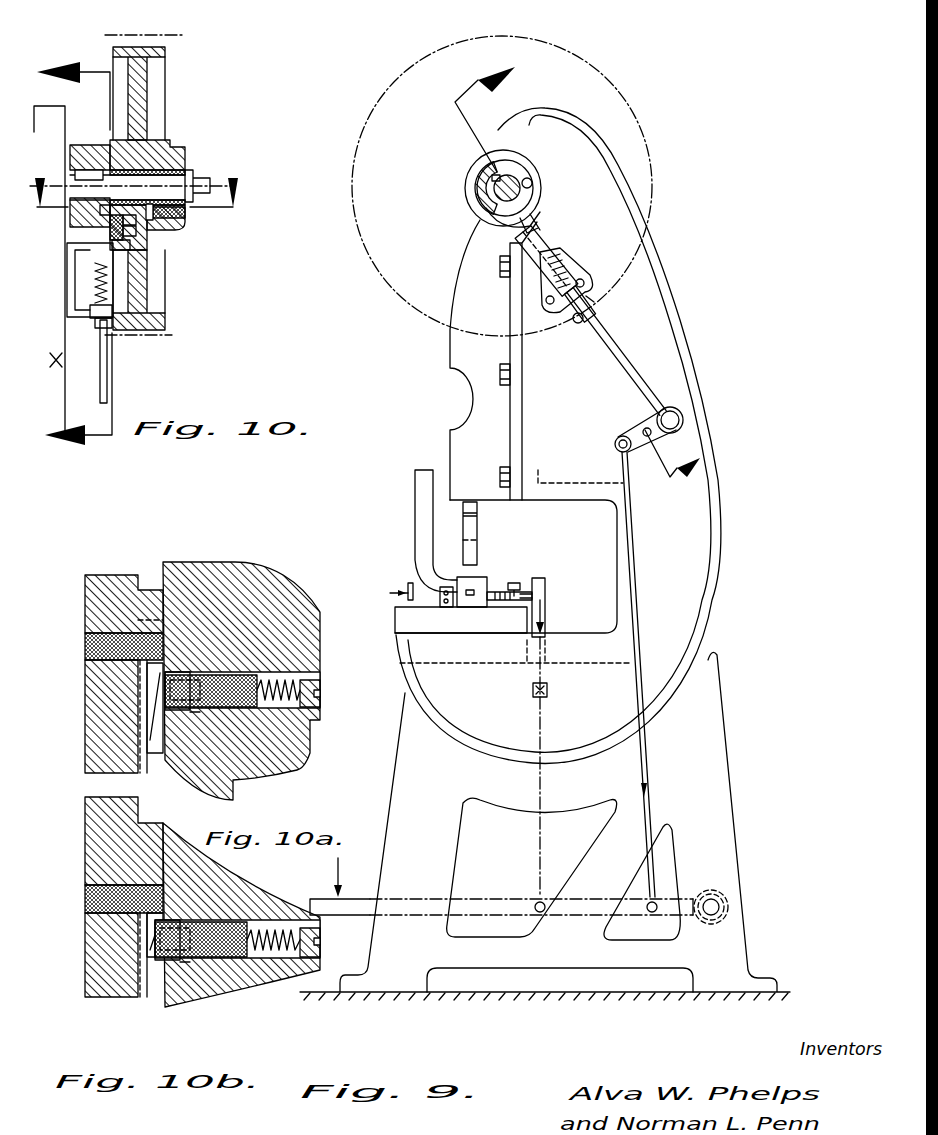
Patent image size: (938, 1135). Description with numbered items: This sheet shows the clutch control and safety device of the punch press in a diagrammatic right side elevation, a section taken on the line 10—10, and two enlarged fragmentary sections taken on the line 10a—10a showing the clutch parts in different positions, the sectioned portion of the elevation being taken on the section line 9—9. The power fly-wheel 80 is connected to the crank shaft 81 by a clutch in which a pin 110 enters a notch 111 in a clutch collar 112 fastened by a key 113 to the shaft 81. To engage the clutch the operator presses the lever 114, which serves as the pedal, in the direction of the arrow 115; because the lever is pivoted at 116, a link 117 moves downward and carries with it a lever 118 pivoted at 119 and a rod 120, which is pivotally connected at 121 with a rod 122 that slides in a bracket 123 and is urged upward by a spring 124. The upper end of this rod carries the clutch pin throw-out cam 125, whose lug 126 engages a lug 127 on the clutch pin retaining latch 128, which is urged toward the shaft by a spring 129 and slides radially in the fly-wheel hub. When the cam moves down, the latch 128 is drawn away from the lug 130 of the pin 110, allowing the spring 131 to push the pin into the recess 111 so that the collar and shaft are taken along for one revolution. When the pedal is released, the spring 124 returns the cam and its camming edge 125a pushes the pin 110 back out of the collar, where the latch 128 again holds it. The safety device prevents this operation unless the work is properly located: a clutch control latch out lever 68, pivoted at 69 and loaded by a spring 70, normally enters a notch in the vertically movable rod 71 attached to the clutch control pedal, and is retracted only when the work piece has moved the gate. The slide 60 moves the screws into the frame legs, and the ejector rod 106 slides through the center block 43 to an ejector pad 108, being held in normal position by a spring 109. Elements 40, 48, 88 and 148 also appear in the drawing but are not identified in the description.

In FIG. 10, the section line 9— 9 is at (66, 66).
In FIG. 9, the section line 10— 10 is at (505, 80).
In FIG. 10, the section line 10a— 10a is at (44, 174).
In FIG. 9, the frame 40 is at (697, 610).
In FIG. 10, the frame 40 is at (44, 106).
In FIG. 9, the center block 43 is at (416, 600).
In FIG. 9, the plate 48 is at (445, 606).
In FIG. 9, the slide 60 is at (470, 598).
In FIG. 9, the clutch control latch out lever 68 is at (541, 578).
In FIG. 9, the pivot 69 is at (514, 582).
In FIG. 9, the spring 70 is at (524, 594).
In FIG. 9, the rod 71 is at (546, 606).
In FIG. 9, the power fly-wheel 80 is at (633, 112).
In FIG. 10, the power fly-wheel 80 is at (166, 77).
In FIG. 10A, the power fly-wheel 80 is at (258, 600).
In FIG. 10B, the power fly-wheel 80 is at (222, 883).
In FIG. 9, the crank shaft 81 is at (512, 178).
In FIG. 10, the crank shaft 81 is at (152, 185).
In FIG. 9, the plunger 88 is at (477, 536).
In FIG. 9, the ejector rod 106 is at (396, 612).
In FIG. 9, the ejector pad 108 is at (410, 583).
In FIG. 9, the spring 109 is at (507, 603).
In FIG. 10, the clutch pin 110 is at (160, 219).
In FIG. 10A, the clutch pin 110 is at (205, 708).
In FIG. 10B, the clutch pin 110 is at (152, 948).
In FIG. 9, the notch 111 is at (523, 195).
In FIG. 10, the notch 111 is at (102, 210).
In FIG. 10A, the notch 111 is at (143, 702).
In FIG. 10B, the notch 111 is at (152, 983).
In FIG. 9, the clutch collar 112 is at (487, 203).
In FIG. 10, the clutch collar 112 is at (93, 145).
In FIG. 10A, the clutch collar 112 is at (98, 612).
In FIG. 10B, the clutch collar 112 is at (100, 848).
In FIG. 9, the key 113 is at (496, 179).
In FIG. 10, the key 113 is at (86, 168).
In FIG. 9, the lever 114 is at (351, 916).
In FIG. 9, the arrow 115 is at (340, 863).
In FIG. 9, the pivot 116 is at (716, 905).
In FIG. 9, the link 117 is at (646, 603).
In FIG. 9, the lever 118 is at (615, 445).
In FIG. 9, the pivot 119 is at (680, 416).
In FIG. 9, the rod 120 is at (603, 349).
In FIG. 10, the rod 120 is at (100, 397).
In FIG. 9, the pivotal connection 121 is at (577, 325).
In FIG. 9, the rod 122 is at (590, 296).
In FIG. 10, the rod 122 is at (96, 296).
In FIG. 9, the bracket 123 is at (572, 284).
In FIG. 9, the spring 124 is at (570, 263).
In FIG. 10, the spring 124 is at (94, 272).
In FIG. 9, the clutch pin throw-out cam 125 is at (535, 204).
In FIG. 10, the clutch pin throw-out cam 125 is at (112, 222).
In FIG. 10A, the clutch pin throw-out cam 125 is at (153, 682).
In FIG. 10B, the clutch pin throw-out cam 125 is at (155, 956).
In FIG. 9, the camming edge 125a is at (522, 205).
In FIG. 10A, the camming edge 125a is at (152, 718).
In FIG. 10B, the camming edge 125a is at (160, 923).
In FIG. 10, the lug 126 is at (95, 242).
In FIG. 10, the lug 127 is at (128, 246).
In FIG. 10, the clutch pin retaining latch 128 is at (134, 220).
In FIG. 10, the spring 129 is at (133, 231).
In FIG. 10, the lug 130 is at (150, 212).
In FIG. 10A, the lug 130 is at (195, 716).
In FIG. 10B, the lug 130 is at (182, 945).
In FIG. 10, the spring 131 is at (195, 229).
In FIG. 10A, the spring 131 is at (292, 688).
In FIG. 10B, the spring 131 is at (280, 930).
In FIG. 9, the lever 148 is at (421, 505).